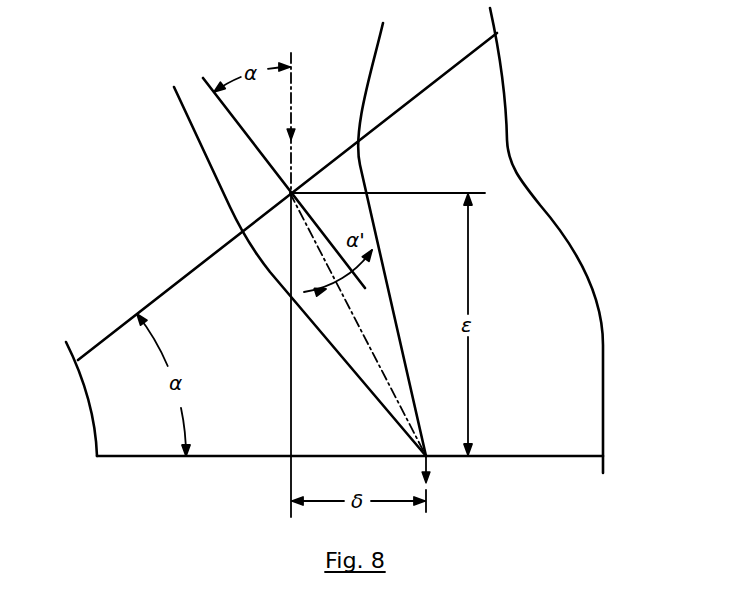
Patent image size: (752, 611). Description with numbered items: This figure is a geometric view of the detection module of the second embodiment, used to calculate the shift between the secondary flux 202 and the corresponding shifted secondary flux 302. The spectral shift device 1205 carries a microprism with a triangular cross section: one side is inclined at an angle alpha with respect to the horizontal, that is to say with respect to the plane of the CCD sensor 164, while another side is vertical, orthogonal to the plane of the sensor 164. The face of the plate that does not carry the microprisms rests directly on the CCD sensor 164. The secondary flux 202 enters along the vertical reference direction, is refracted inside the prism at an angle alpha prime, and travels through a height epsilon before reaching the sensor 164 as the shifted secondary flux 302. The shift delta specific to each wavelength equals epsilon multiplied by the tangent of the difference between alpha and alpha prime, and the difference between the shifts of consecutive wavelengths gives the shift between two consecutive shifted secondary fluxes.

The secondary flux 202 is at (292, 103).
The spectral shift device 1205 is at (588, 327).
The CCD sensor 164 is at (445, 456).
The shifted secondary flux 302 is at (427, 491).